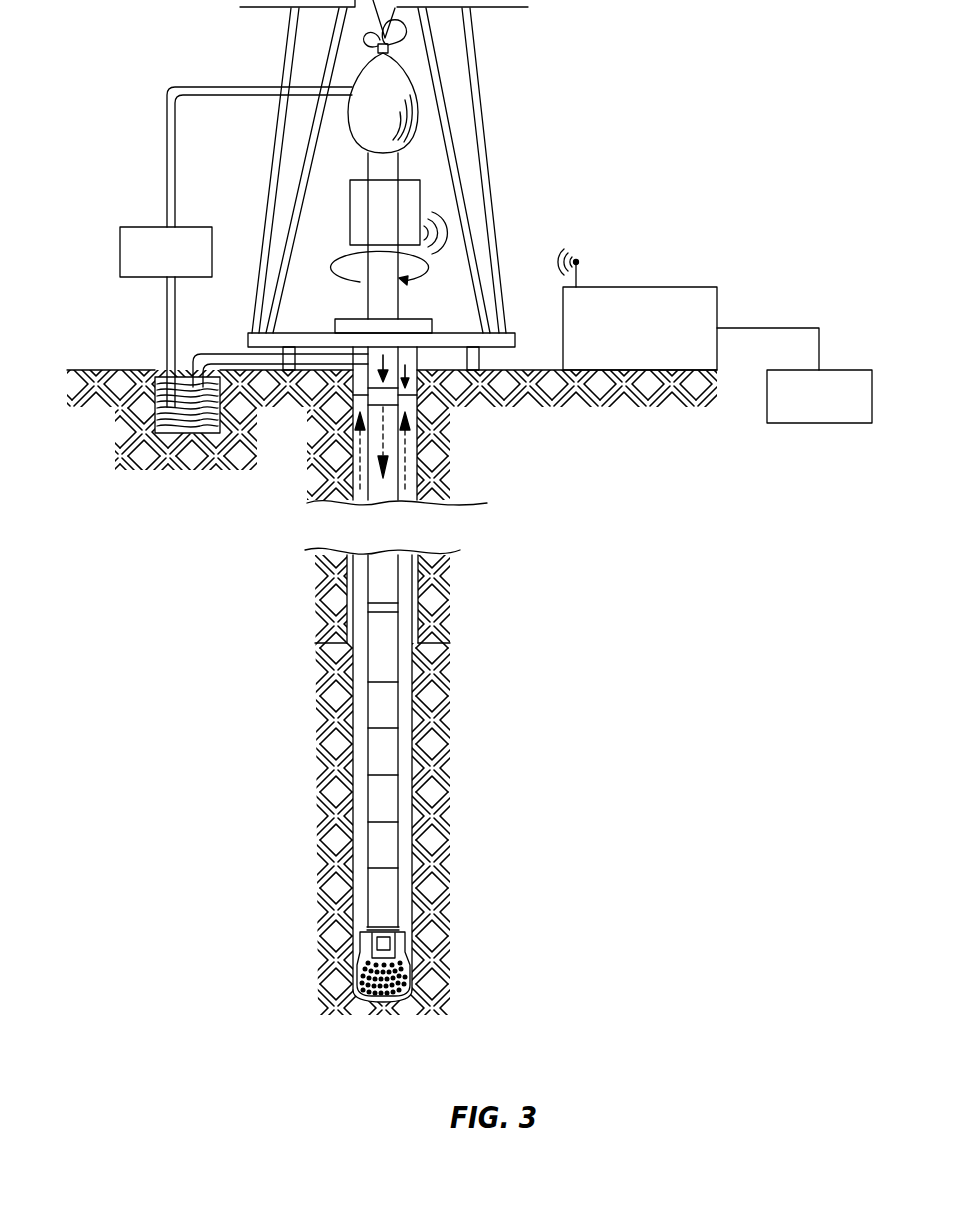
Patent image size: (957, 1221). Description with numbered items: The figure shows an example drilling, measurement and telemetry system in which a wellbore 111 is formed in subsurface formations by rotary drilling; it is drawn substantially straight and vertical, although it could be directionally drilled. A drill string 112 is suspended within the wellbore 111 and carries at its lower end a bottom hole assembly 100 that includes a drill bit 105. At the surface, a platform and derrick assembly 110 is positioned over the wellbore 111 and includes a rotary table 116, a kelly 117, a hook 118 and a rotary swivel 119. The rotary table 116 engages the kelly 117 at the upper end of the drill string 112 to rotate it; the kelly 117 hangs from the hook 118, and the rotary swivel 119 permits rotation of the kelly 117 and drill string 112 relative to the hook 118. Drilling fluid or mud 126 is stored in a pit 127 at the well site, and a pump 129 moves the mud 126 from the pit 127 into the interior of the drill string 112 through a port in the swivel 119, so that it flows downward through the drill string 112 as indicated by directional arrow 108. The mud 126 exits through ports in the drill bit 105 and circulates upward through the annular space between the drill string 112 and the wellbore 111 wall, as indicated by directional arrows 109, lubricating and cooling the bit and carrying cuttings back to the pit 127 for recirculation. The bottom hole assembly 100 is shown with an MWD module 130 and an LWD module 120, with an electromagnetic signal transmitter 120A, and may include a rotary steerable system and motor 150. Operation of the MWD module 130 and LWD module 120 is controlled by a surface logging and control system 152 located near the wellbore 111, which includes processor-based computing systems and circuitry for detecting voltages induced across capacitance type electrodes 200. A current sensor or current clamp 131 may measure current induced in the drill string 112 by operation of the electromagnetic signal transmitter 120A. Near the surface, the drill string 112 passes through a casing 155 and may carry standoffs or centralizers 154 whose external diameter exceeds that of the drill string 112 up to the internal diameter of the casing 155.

The bottom hole assembly 100 is at (458, 672).
The drill bit 105 is at (365, 965).
The directional arrow 108 is at (384, 458).
The directional arrows 109 is at (360, 450).
The platform and derrick assembly 110 is at (485, 108).
The wellbore 111 is at (432, 326).
The drill string 112 is at (386, 362).
The rotary table 116 is at (410, 362).
The kelly 117 is at (373, 297).
The hook 118 is at (410, 44).
The rotary swivel 119 is at (378, 120).
The LWD module 120 is at (377, 753).
The electromagnetic signal transmitter 120A is at (377, 845).
The drilling fluid or mud 126 is at (181, 433).
The pit 127 is at (160, 377).
The pump 129 is at (140, 277).
The MWD module 130 is at (377, 800).
The current sensor or current clamp 131 is at (418, 203).
The rotary steerable system and motor 150 is at (377, 898).
The surface logging and control system 152 is at (683, 287).
The standoffs or centralizers 154 is at (383, 396).
The casing 155 is at (427, 622).
The capacitance type electrodes 200 is at (838, 410).